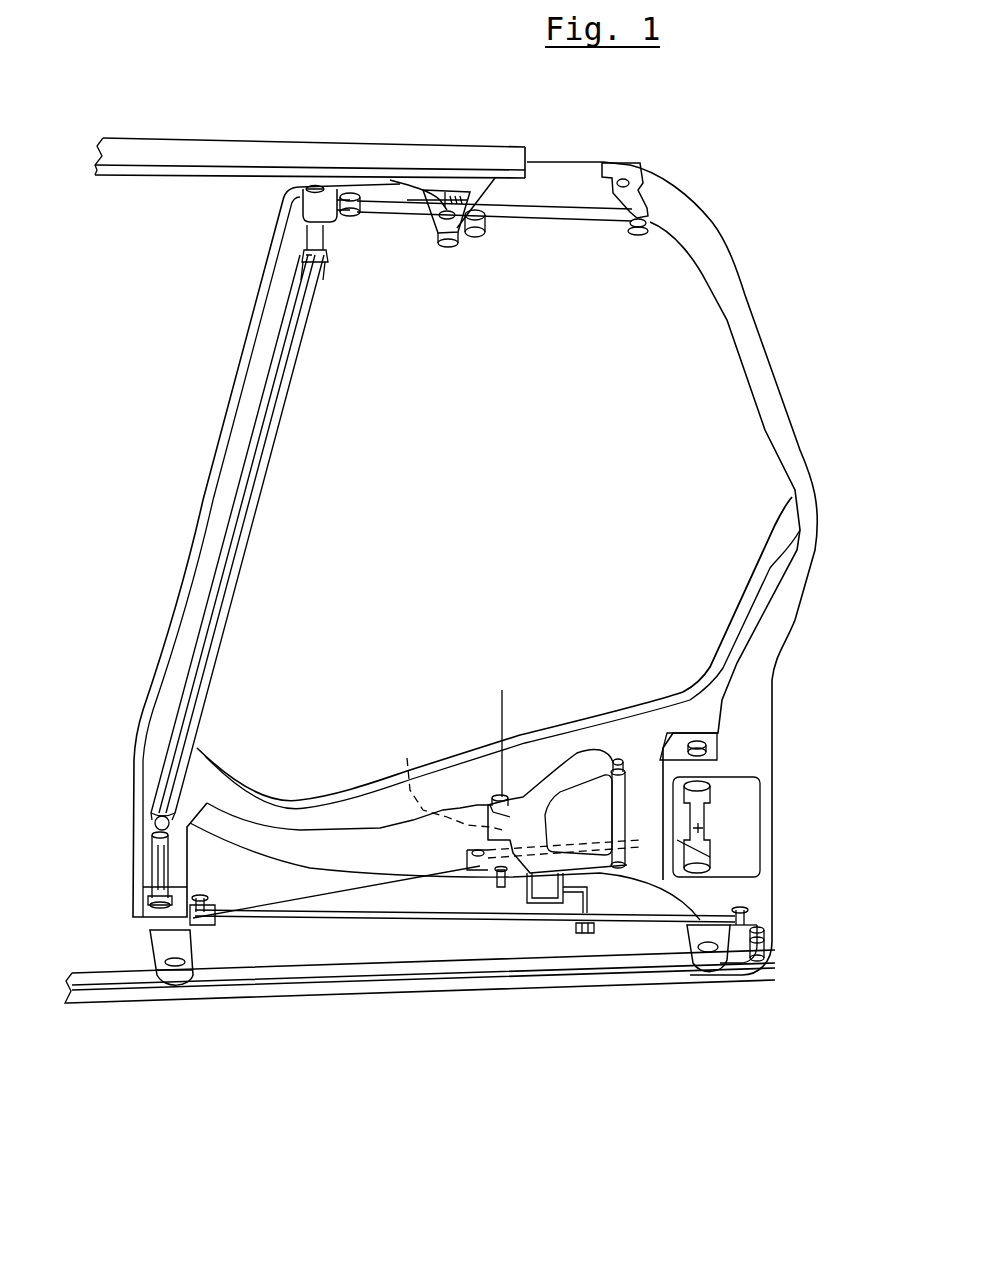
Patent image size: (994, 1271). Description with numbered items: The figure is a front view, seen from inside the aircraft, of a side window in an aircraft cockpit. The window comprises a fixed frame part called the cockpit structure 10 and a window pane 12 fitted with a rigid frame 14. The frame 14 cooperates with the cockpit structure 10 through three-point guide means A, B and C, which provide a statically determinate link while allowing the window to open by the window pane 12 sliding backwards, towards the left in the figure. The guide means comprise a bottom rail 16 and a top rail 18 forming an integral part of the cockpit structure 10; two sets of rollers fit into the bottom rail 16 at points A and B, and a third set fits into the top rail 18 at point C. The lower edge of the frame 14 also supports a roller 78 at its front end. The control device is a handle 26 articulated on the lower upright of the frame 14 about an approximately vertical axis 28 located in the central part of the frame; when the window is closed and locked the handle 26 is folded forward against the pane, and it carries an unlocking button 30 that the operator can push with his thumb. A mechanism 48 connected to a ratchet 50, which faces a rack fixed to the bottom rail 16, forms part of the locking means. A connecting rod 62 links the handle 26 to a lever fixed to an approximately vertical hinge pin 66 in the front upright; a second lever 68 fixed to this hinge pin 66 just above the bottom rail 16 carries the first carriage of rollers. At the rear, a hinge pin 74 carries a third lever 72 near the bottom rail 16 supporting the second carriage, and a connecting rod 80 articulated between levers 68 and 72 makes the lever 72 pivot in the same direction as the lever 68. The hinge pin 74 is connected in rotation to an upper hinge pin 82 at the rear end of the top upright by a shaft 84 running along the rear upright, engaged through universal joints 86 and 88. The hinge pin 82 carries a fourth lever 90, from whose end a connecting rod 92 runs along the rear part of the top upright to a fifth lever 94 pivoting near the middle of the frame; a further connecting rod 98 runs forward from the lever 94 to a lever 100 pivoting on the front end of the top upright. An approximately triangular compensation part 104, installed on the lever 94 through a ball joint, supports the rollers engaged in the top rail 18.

The cockpit structure 10 is at (143, 137).
The window pane 12 is at (547, 455).
The rigid frame 14 is at (725, 239).
The bottom rail 16 is at (470, 985).
The top rail 18 is at (275, 150).
The handle 26 is at (545, 762).
The articulation axis 28 is at (500, 705).
The button 30 is at (617, 757).
The mechanism 48 is at (508, 899).
The ratchet 50 is at (605, 925).
The connecting rod 62 is at (446, 779).
The hinge pin 66 is at (700, 827).
The second lever 68 is at (700, 932).
The third lever 72 is at (167, 945).
The hinge pin 74 is at (160, 860).
The roller 78 is at (760, 962).
The connecting rod 80 is at (343, 913).
The hinge pin 82 is at (302, 238).
The shaft 84 is at (273, 415).
The universal joint 86 is at (157, 825).
The universal joint 88 is at (302, 268).
The fourth lever 90 is at (300, 198).
The connecting rod 92 is at (390, 225).
The fifth lever 94 is at (450, 242).
The connecting rod 98 is at (567, 215).
The lever 100 is at (645, 196).
The compensation part 104 is at (462, 185).
The connection point A is at (709, 994).
The connection point B is at (186, 1014).
The connection point C is at (435, 141).